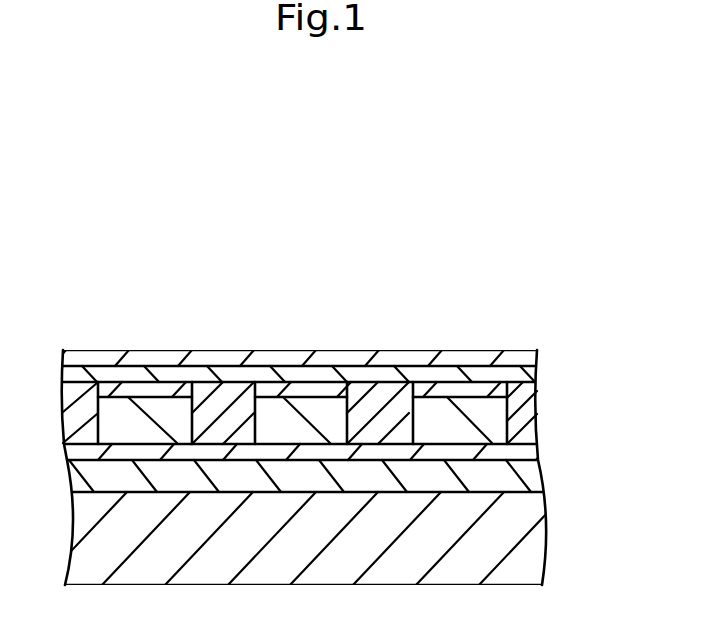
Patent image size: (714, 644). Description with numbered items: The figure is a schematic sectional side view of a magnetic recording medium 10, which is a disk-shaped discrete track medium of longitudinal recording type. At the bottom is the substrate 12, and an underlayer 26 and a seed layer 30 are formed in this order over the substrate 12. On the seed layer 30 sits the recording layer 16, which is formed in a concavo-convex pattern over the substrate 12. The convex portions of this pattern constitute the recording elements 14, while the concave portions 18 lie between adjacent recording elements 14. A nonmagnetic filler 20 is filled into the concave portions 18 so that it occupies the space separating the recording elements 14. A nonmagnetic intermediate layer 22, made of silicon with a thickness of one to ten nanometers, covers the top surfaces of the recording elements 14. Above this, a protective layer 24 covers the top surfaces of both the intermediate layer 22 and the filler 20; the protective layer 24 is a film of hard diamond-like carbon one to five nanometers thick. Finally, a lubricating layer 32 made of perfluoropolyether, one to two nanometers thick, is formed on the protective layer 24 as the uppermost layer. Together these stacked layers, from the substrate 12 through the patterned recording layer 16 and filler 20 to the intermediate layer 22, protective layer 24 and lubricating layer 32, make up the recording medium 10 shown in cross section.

The magnetic recording medium 10 is at (310, 228).
The substrate 12 is at (548, 533).
The recording element 14 is at (167, 412).
The recording layer 16 is at (541, 412).
The concave portion 18 is at (390, 396).
The nonmagnetic filler 20 is at (375, 407).
The nonmagnetic intermediate layer 22 is at (315, 392).
The protective layer 24 is at (537, 377).
The underlayer 26 is at (541, 481).
The seed layer 30 is at (538, 455).
The lubricating layer 32 is at (537, 355).